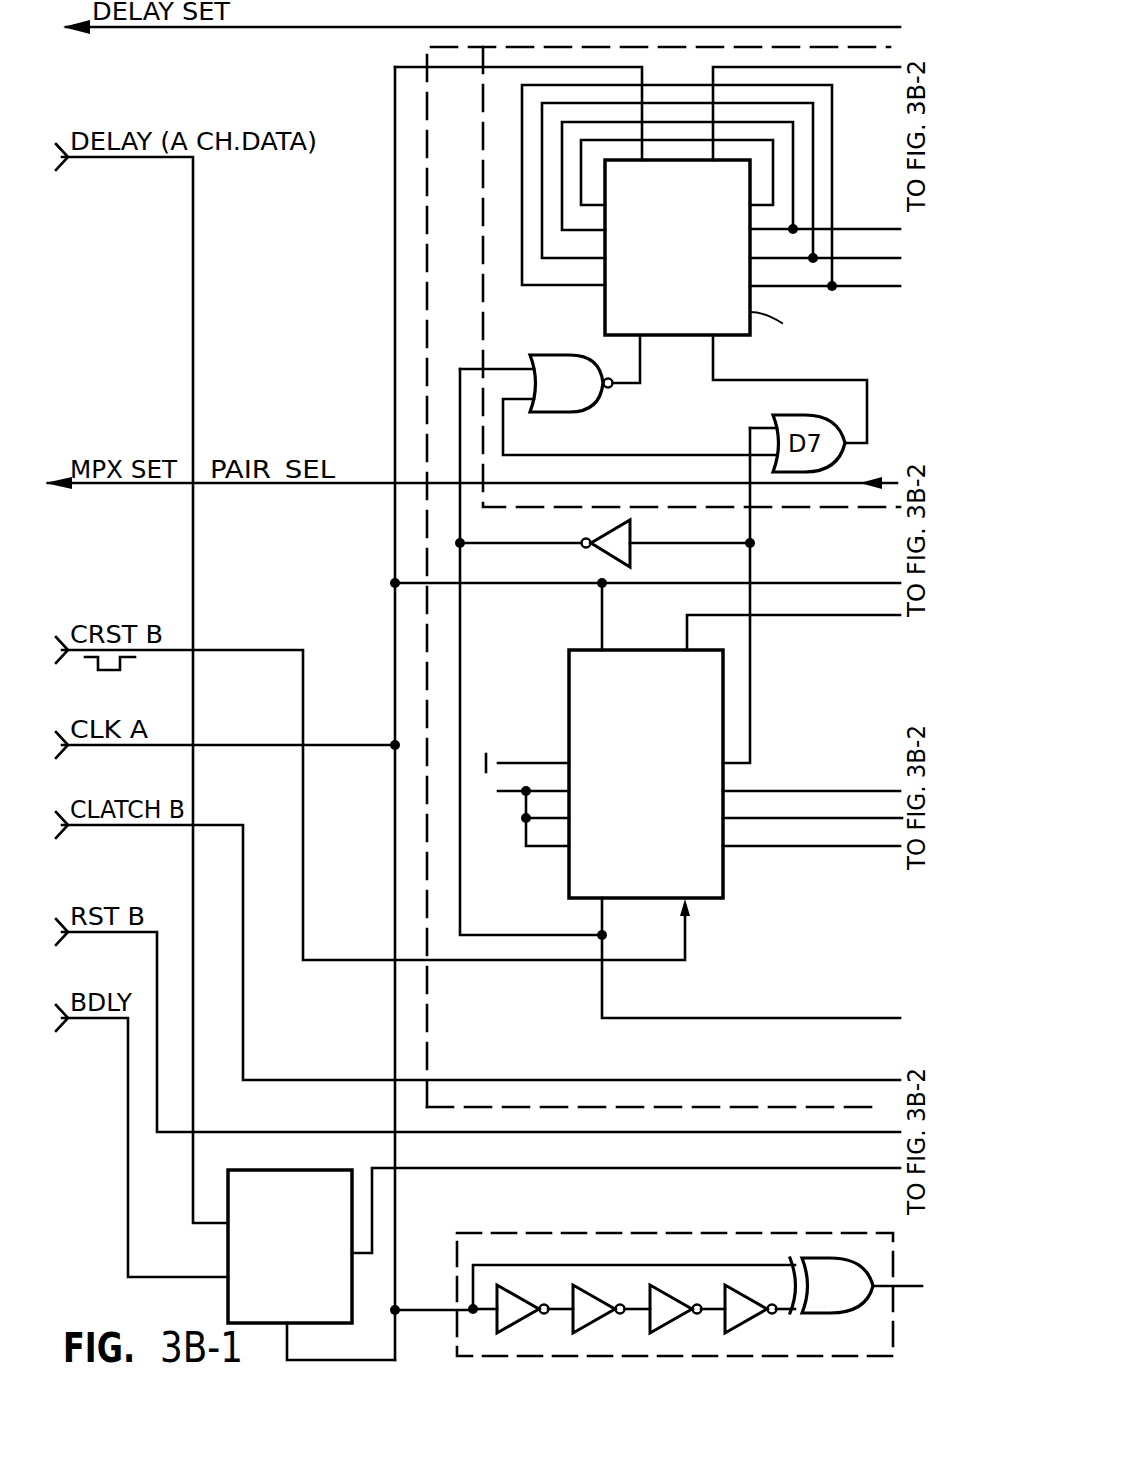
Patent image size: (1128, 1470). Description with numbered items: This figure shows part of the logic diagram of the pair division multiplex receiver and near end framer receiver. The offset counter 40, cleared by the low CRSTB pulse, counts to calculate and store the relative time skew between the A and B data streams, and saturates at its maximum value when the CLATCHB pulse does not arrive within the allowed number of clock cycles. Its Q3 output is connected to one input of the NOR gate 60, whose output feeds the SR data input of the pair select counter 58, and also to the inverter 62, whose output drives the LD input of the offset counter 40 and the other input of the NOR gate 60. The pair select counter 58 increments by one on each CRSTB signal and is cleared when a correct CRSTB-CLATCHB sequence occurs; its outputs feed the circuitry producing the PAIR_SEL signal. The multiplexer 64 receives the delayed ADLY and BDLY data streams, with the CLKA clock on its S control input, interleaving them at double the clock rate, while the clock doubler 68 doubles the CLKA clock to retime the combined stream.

The offset counter 40 is at (584, 650).
The pair select counter 58 is at (603, 320).
The NOR gate 60 is at (549, 355).
The inverter 62 is at (630, 552).
The multiplexer 64 is at (226, 1296).
The clock doubler 68 is at (557, 1232).